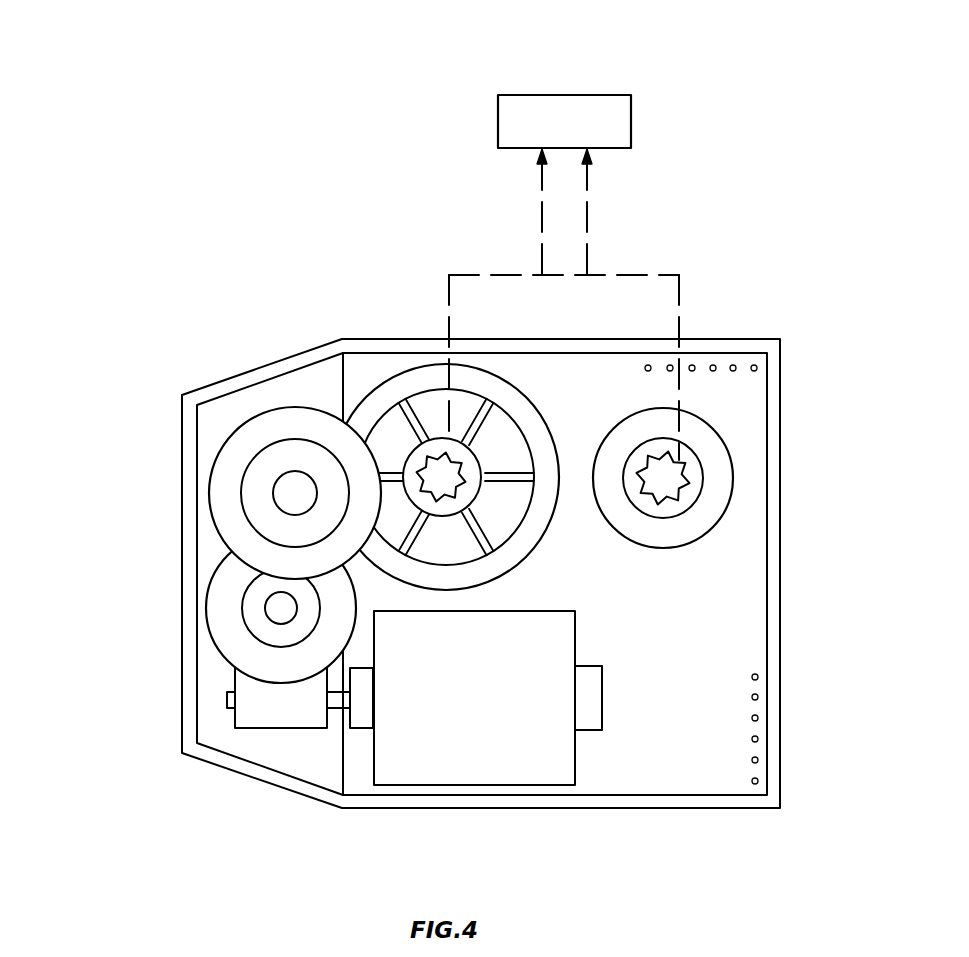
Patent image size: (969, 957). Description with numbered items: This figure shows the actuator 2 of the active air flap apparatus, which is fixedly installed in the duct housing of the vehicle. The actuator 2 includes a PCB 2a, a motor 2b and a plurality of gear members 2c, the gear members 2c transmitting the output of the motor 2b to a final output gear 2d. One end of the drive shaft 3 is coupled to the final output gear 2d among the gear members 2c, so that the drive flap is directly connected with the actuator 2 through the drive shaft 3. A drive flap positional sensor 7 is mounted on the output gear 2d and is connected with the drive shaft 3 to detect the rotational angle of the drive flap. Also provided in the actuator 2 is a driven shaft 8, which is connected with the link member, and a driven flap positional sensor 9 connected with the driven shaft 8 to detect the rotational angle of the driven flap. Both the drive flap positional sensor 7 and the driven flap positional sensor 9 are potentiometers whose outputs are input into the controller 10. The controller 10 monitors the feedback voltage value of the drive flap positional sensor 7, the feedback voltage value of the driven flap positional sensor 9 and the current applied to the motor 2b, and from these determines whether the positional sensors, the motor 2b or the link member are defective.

The actuator 2 is at (232, 367).
The PCB 2a is at (723, 648).
The motor 2b is at (474, 760).
The gear members 2c is at (233, 597).
The final output gear 2d is at (370, 402).
The drive shaft 3 is at (447, 477).
The drive flap positional sensor 7 is at (428, 448).
The driven shaft 8 is at (675, 465).
The driven flap positional sensor 9 is at (718, 475).
The controller 10 is at (565, 95).